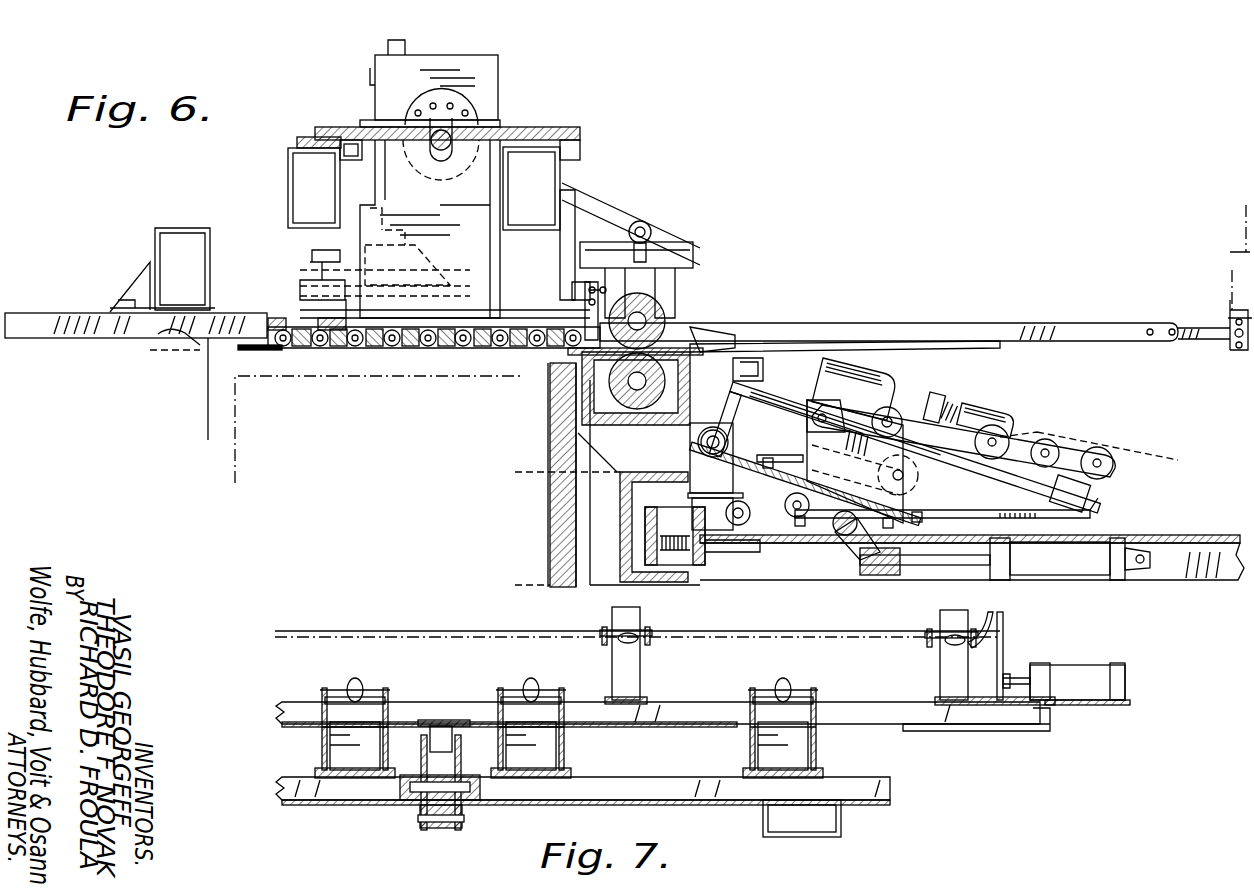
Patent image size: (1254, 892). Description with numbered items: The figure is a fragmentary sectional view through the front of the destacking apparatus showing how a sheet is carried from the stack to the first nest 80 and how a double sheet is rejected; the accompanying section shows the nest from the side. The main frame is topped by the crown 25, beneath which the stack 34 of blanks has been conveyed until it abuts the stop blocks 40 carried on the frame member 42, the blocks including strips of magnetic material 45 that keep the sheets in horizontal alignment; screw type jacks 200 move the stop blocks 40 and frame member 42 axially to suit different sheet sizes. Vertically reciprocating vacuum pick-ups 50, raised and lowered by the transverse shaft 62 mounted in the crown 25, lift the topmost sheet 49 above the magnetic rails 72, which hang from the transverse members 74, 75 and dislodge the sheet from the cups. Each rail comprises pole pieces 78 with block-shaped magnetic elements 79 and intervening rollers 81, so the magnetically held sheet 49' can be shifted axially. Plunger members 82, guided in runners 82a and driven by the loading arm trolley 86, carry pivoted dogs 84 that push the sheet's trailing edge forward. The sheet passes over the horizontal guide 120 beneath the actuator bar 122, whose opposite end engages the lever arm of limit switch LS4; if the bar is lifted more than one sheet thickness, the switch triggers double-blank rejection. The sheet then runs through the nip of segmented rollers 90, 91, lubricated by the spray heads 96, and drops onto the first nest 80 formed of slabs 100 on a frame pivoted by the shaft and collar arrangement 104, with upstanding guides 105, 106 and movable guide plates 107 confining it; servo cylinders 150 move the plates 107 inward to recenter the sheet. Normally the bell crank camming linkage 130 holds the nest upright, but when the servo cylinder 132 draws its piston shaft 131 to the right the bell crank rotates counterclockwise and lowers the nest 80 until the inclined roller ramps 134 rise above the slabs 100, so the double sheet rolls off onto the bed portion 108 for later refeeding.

In FIG. 6, the crown 25 is at (545, 103).
In FIG. 6, the stack of sheet metal blanks 34 is at (235, 452).
In FIG. 6, the stop blocks 40 is at (562, 486).
In FIG. 6, the frame member 42 is at (626, 514).
In FIG. 6, the strips of magnetic material 45 is at (552, 522).
In FIG. 6, the topmost sheet 49 is at (307, 398).
In FIG. 7, the magnetically held sheet 49' is at (637, 616).
In FIG. 6, the vacuum pick-ups 50 is at (296, 268).
In FIG. 6, the transverse shaft 62 is at (438, 128).
In FIG. 6, the magnetic rails 72 is at (282, 326).
In FIG. 6, the transverse member 74 is at (288, 172).
In FIG. 6, the transverse member 75 is at (578, 186).
In FIG. 6, the pole pieces 78 is at (296, 345).
In FIG. 6, the magnetic elements 79 is at (493, 346).
In FIG. 6, the first nest 80 is at (1025, 408).
In FIG. 7, the first nest 80 is at (332, 622).
In FIG. 6, the rollers 81 is at (412, 346).
In FIG. 6, the plunger members 82 is at (1015, 326).
In FIG. 6, the runners 82a is at (78, 339).
In FIG. 6, the dogs 84 is at (192, 348).
In FIG. 6, the loading arm trolley 86 is at (1232, 282).
In FIG. 6, the segmented roller 90 is at (660, 338).
In FIG. 6, the segmented roller 91 is at (620, 388).
In FIG. 6, the spray heads 96 is at (648, 234).
In FIG. 6, the slabs 100 is at (1035, 476).
In FIG. 7, the slabs 100 is at (626, 640).
In FIG. 6, the shaft and collar arrangement 104 is at (697, 440).
In FIG. 6, the upstanding guides 105 is at (758, 376).
In FIG. 7, the upstanding guides 105 is at (615, 620).
In FIG. 6, the upstanding guides 106 is at (862, 392).
In FIG. 7, the upstanding guides 106 is at (992, 622).
In FIG. 6, the movable guide plates 107 is at (930, 402).
In FIG. 7, the movable guide plates 107 is at (1005, 642).
In FIG. 6, the bed portion 108 is at (1170, 546).
In FIG. 7, the bed portion 108 is at (720, 790).
In FIG. 6, the horizontal guide 120 is at (598, 352).
In FIG. 6, the actuator bar 122 is at (608, 312).
In FIG. 6, the bell crank camming linkage 130 is at (860, 556).
In FIG. 7, the bell crank camming linkage 130 is at (420, 806).
In FIG. 6, the piston shaft 131 is at (962, 580).
In FIG. 7, the piston shaft 131 is at (450, 826).
In FIG. 6, the servo cylinder 132 is at (1072, 570).
In FIG. 6, the inclined roller ramps 134 is at (1110, 470).
In FIG. 7, the inclined roller ramps 134 is at (351, 688).
In FIG. 6, the servo cylinders 150 is at (905, 482).
In FIG. 7, the servo cylinders 150 is at (1082, 676).
In FIG. 6, the screw type jacks 200 is at (750, 575).
In FIG. 6, the limit switch LS4 is at (572, 292).